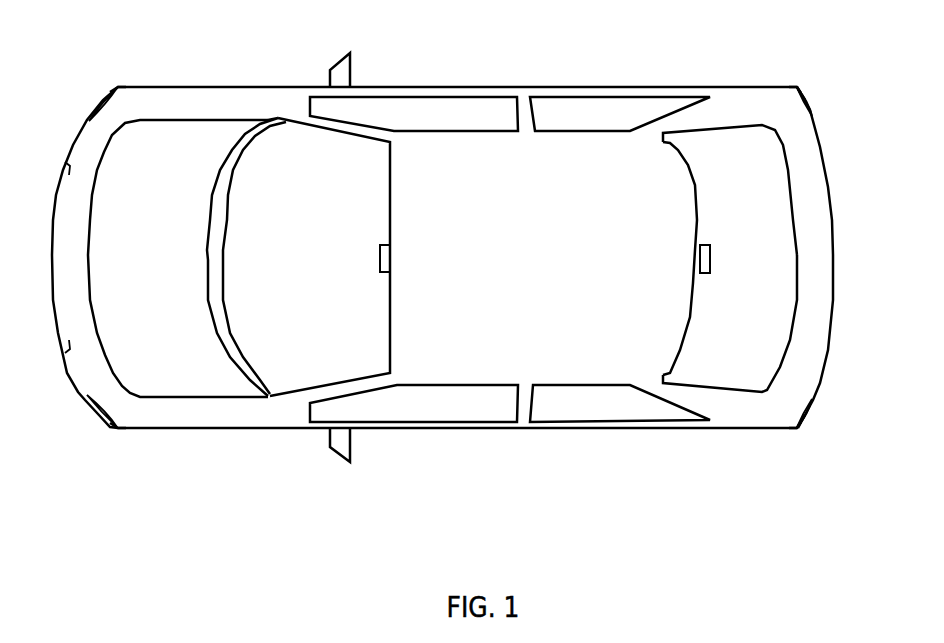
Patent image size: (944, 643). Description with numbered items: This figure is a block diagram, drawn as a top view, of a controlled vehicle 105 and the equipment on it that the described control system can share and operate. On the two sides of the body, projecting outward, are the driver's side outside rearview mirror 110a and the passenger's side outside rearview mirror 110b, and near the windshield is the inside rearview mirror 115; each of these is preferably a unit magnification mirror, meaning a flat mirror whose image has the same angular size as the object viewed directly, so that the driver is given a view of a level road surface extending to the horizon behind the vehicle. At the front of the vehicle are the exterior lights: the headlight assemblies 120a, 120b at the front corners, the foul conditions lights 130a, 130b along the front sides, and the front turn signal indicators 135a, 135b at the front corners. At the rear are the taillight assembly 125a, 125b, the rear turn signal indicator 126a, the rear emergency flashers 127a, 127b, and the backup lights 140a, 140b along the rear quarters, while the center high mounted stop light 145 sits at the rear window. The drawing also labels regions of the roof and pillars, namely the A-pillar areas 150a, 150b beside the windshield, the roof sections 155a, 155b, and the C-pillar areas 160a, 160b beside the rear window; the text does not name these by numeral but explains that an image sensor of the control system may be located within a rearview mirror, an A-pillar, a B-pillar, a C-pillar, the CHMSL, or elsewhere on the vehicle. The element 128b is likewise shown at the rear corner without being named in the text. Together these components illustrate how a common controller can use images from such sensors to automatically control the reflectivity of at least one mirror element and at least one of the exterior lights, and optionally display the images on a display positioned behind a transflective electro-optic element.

The controlled vehicle 105 is at (513, 270).
The driver's side outside rearview mirror 110a is at (343, 440).
The passenger's side outside rearview mirror 110b is at (343, 73).
The inside rearview mirror 115 is at (378, 258).
The headlight assembly 120a is at (87, 397).
The headlight assembly 120b is at (88, 118).
The taillight assembly 125a is at (810, 417).
The taillight assembly 125b is at (808, 102).
The rear turn signal indicator 126a is at (807, 428).
The rear emergency flasher 127a is at (802, 432).
The rear emergency flasher 127b is at (802, 88).
The rear corner 128b is at (808, 92).
The foul conditions light 130a is at (66, 346).
The foul conditions light 130b is at (66, 167).
The front turn signal indicator 135a is at (110, 432).
The front turn signal indicator 135b is at (110, 88).
The backup light 140a is at (813, 403).
The backup light 140b is at (817, 120).
The center high mounted stop light 145 is at (730, 288).
The first A-pillar 150a is at (333, 385).
The second A-pillar 150b is at (333, 131).
The first roof panel gap 155a is at (527, 383).
The second roof panel gap 155b is at (527, 133).
The first C-pillar 160a is at (670, 395).
The second C-pillar 160b is at (673, 120).